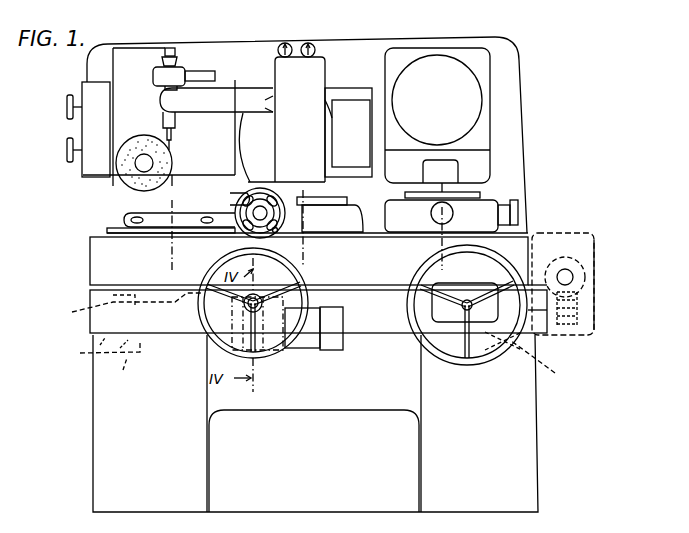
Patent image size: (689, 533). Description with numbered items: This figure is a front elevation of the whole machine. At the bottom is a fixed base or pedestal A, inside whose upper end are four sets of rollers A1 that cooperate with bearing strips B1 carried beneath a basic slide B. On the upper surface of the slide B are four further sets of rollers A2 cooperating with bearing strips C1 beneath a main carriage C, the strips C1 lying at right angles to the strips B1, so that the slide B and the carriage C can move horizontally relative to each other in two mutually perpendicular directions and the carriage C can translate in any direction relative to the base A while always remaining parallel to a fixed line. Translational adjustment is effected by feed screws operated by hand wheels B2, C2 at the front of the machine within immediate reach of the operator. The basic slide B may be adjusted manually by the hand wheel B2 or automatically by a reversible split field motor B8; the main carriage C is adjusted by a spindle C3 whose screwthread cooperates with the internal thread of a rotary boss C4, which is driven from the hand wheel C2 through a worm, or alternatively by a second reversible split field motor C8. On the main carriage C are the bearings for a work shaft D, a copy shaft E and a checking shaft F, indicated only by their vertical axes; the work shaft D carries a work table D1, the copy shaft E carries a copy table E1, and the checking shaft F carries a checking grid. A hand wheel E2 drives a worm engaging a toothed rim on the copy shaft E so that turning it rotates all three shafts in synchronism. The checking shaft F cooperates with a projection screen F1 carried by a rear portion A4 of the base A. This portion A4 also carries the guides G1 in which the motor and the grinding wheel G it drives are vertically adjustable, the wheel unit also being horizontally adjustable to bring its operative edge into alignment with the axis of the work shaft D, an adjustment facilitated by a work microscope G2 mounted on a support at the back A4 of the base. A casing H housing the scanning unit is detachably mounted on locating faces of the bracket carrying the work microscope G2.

The fixed base or pedestal A is at (518, 433).
The rollers A1 is at (316, 359).
The rollers A2 is at (125, 307).
The portion of the base A4 is at (510, 155).
The basic slide B is at (98, 327).
The bearing strips B1 is at (120, 373).
The hand wheel B2 is at (274, 356).
The reversible split field motor B8 is at (333, 318).
The main carriage C is at (97, 267).
The bearing strips C1 is at (175, 302).
The hand wheel C2 is at (452, 362).
The spindle C3 is at (250, 100).
The rotary boss C4 is at (330, 132).
The reversible split field motor C8 is at (580, 233).
The work shaft D is at (175, 247).
The work table D1 is at (143, 219).
The copy shaft E is at (306, 238).
The copy table E1 is at (338, 197).
The hand wheel E2 is at (272, 232).
The checking shaft F is at (442, 243).
The projection screen F1 is at (467, 108).
The grinding wheel G is at (141, 136).
The guides G1 is at (168, 50).
The work microscope G2 is at (177, 76).
The casing H is at (312, 65).